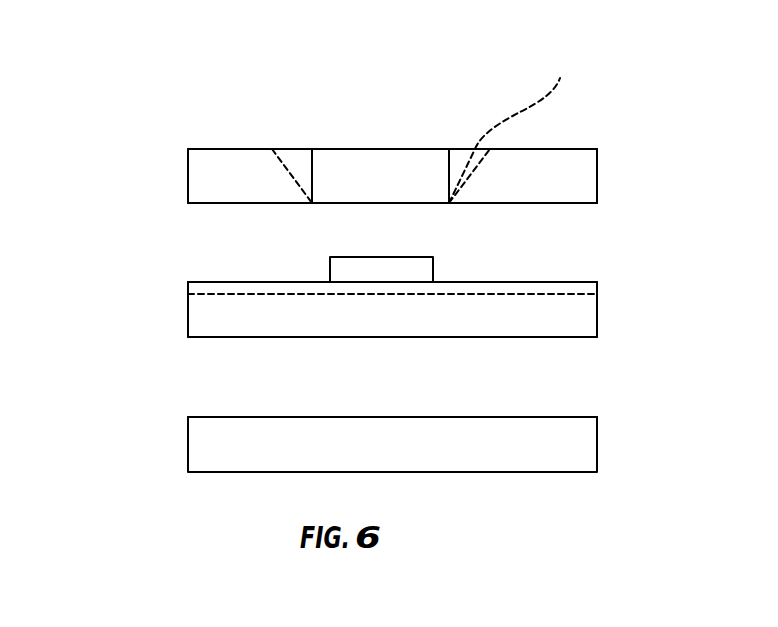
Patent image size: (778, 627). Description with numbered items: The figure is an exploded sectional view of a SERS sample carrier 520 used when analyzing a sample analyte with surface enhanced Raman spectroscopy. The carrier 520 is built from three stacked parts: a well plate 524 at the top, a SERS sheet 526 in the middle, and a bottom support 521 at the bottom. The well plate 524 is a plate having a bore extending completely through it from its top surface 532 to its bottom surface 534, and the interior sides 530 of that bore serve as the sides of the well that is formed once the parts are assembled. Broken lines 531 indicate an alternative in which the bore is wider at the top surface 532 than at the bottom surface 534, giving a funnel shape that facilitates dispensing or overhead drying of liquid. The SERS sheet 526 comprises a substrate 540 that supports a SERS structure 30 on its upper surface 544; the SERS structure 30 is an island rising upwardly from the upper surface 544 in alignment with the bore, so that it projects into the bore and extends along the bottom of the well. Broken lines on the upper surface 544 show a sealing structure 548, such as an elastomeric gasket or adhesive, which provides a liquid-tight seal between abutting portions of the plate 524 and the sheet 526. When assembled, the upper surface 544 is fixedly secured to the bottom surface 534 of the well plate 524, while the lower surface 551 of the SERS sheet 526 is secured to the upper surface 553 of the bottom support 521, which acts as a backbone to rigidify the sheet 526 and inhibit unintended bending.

The SERS sample carrier 520 is at (153, 104).
The bottom support 521 is at (188, 455).
The well plate 524 is at (188, 184).
The SERS sheet 526 is at (181, 315).
The interior sides 530 is at (449, 182).
The broken lines 531 is at (515, 125).
The top surface 532 is at (255, 149).
The bottom surface 534 is at (550, 203).
The substrate 540 is at (222, 337).
The upper surface 544 is at (222, 282).
The sealing structure 548 is at (555, 294).
The lower surface 551 is at (553, 337).
The upper surface 553 is at (305, 417).
The SERS structure 30 is at (433, 265).